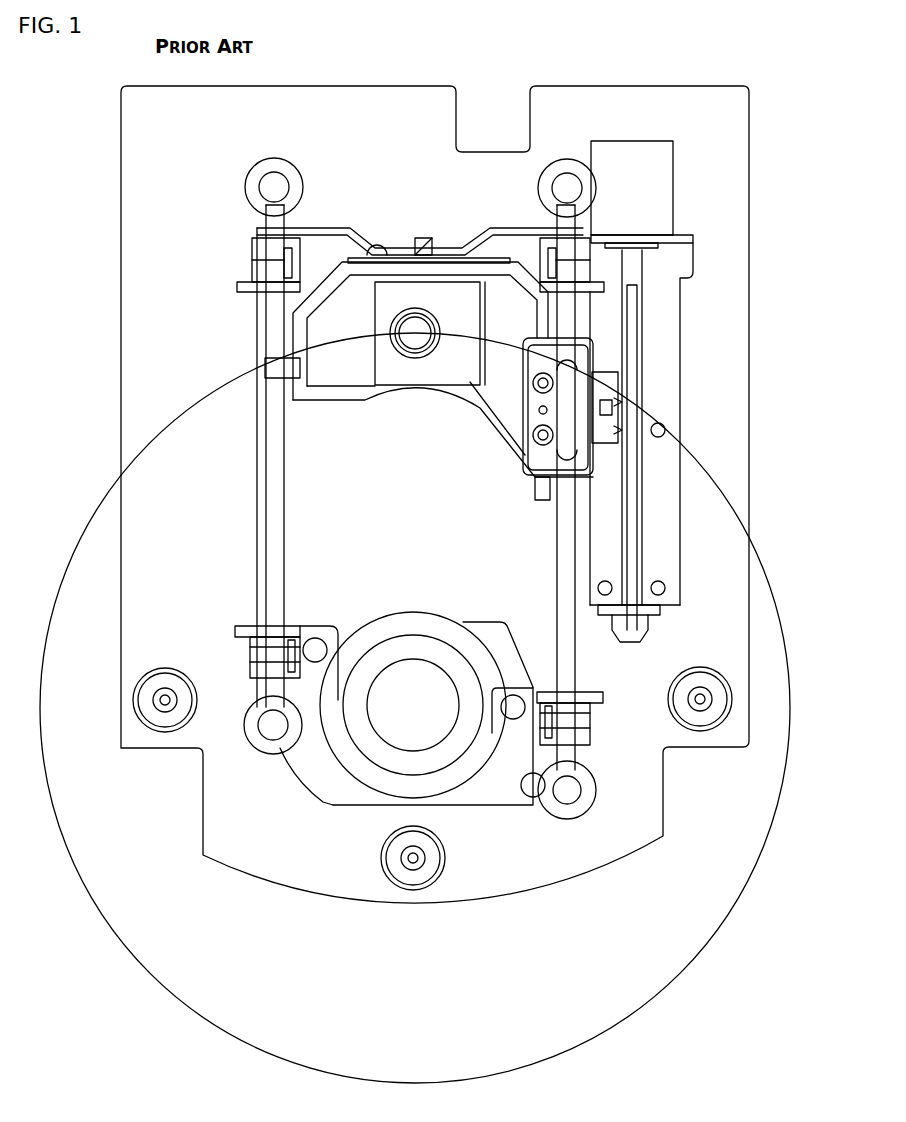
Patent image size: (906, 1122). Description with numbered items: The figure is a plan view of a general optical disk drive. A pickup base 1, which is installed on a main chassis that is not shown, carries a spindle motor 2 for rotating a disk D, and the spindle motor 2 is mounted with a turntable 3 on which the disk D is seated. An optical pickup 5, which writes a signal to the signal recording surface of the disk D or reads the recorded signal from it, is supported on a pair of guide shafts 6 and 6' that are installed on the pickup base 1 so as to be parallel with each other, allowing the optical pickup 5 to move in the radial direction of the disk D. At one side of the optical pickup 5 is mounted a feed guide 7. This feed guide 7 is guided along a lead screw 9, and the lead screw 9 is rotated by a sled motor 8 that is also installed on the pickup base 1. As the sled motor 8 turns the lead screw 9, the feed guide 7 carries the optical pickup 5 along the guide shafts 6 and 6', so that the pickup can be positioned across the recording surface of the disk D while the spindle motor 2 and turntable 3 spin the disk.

The pickup base 1 is at (738, 330).
The spindle motor 2 is at (412, 727).
The turntable 3 is at (362, 752).
The optical pickup 5 is at (407, 320).
The guide shaft 6 is at (223, 456).
The guide shaft 6' is at (687, 518).
The feed guide 7 is at (600, 443).
The sled motor 8 is at (652, 188).
The lead screw 9 is at (632, 345).
The disk D is at (683, 970).